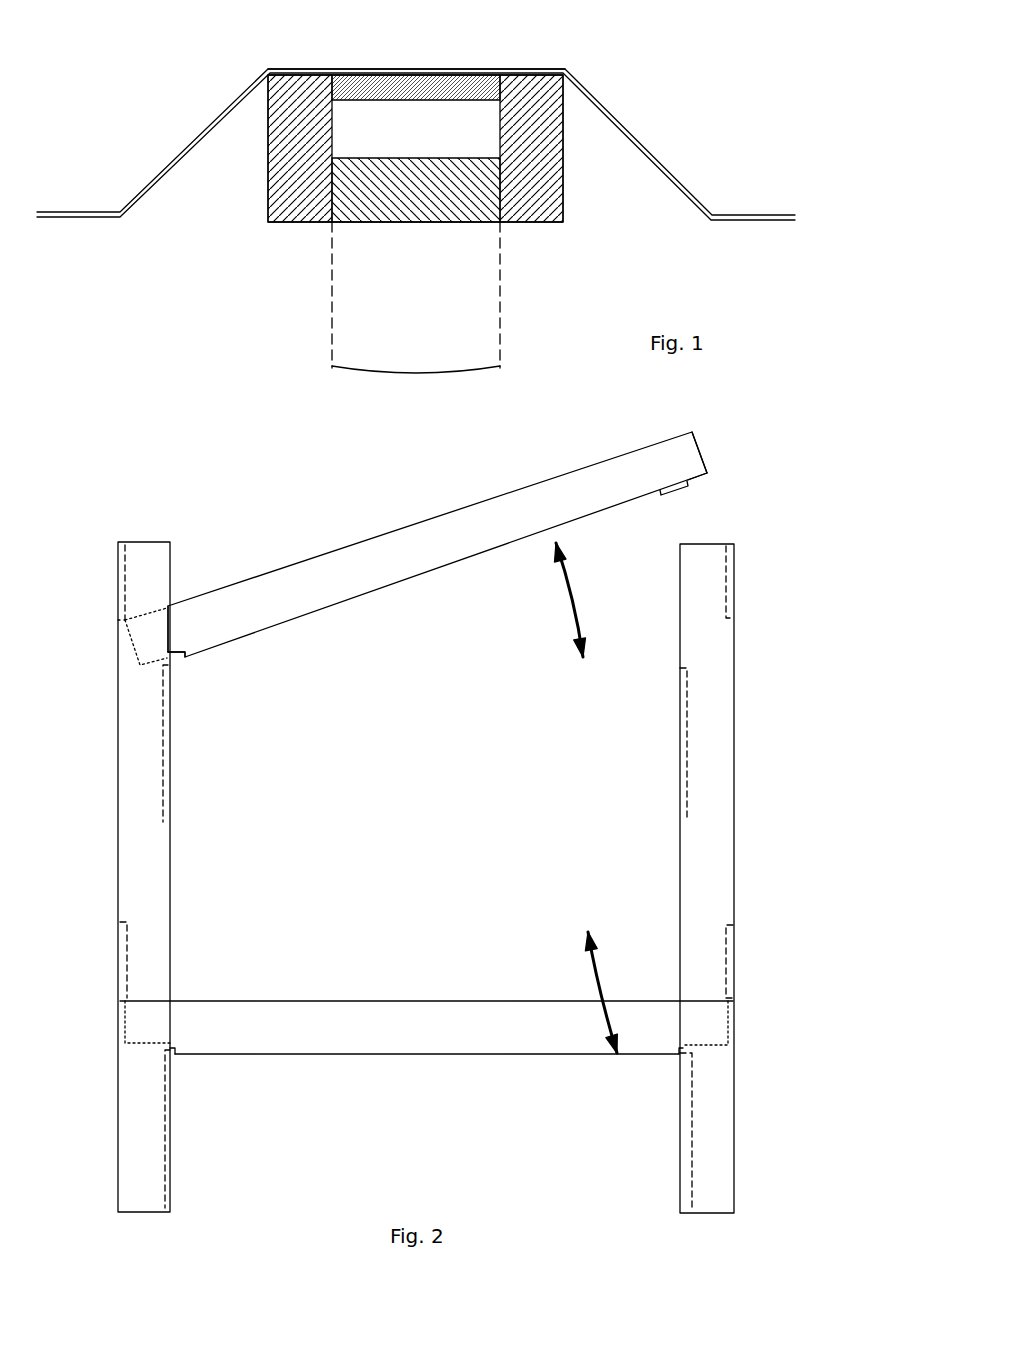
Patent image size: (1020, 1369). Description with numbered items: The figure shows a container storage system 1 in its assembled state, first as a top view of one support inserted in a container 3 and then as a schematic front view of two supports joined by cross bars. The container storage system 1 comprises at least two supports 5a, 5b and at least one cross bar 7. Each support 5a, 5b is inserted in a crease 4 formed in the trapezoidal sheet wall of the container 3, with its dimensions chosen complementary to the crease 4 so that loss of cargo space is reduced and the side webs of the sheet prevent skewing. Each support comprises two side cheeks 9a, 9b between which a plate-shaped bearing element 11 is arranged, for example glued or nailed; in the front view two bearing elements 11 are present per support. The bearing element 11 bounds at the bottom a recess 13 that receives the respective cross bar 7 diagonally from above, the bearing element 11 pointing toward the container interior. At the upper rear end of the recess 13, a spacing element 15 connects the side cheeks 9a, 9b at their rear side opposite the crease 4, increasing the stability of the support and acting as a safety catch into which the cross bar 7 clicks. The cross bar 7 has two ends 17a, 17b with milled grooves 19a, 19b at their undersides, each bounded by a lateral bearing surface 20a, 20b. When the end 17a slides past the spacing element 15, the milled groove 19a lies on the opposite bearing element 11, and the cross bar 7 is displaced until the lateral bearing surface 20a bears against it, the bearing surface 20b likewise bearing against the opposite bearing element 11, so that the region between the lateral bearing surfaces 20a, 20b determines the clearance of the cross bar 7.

In FIG. 1, the container storage system 1 is at (208, 287).
In FIG. 2, the container storage system 1 is at (118, 497).
In FIG. 1, the container 3 is at (152, 122).
In FIG. 1, the crease 4 is at (535, 71).
In FIG. 1, the support 5a is at (540, 250).
In FIG. 2, the support 5a is at (130, 725).
In FIG. 2, the support 5b is at (718, 725).
In FIG. 1, the cross bar 7 is at (458, 285).
In FIG. 2, the cross bar 7 is at (415, 568).
In FIG. 1, the side cheek 9a is at (562, 197).
In FIG. 1, the side cheek 9b is at (268, 180).
In FIG. 1, the bearing element 11 is at (390, 198).
In FIG. 2, the bearing element 11 is at (165, 738).
In FIG. 1, the recess 13 is at (458, 193).
In FIG. 2, the recess 13 is at (180, 588).
In FIG. 1, the spacing element 15 is at (400, 82).
In FIG. 2, the spacing element 15 is at (118, 572).
In FIG. 2, the end 17a is at (702, 452).
In FIG. 2, the end 17b is at (127, 648).
In FIG. 2, the milled groove 19a is at (702, 482).
In FIG. 2, the milled groove 19b is at (172, 660).
In FIG. 2, the lateral bearing surface 20a is at (664, 494).
In FIG. 2, the lateral bearing surface 20b is at (175, 655).